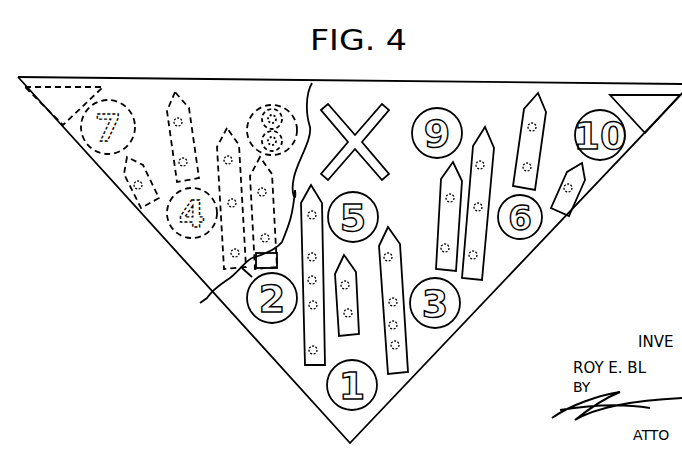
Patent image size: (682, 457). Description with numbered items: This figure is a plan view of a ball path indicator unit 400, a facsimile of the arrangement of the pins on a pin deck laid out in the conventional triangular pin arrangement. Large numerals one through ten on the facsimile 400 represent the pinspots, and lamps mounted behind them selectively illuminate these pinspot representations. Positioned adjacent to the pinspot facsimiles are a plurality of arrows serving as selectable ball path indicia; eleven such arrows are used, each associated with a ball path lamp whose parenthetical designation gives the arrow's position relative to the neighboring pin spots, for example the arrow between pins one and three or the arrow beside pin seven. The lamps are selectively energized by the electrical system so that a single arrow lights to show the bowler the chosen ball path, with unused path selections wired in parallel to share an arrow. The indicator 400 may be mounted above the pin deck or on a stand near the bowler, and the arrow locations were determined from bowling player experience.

The ball path indicator unit 400 is at (210, 86).